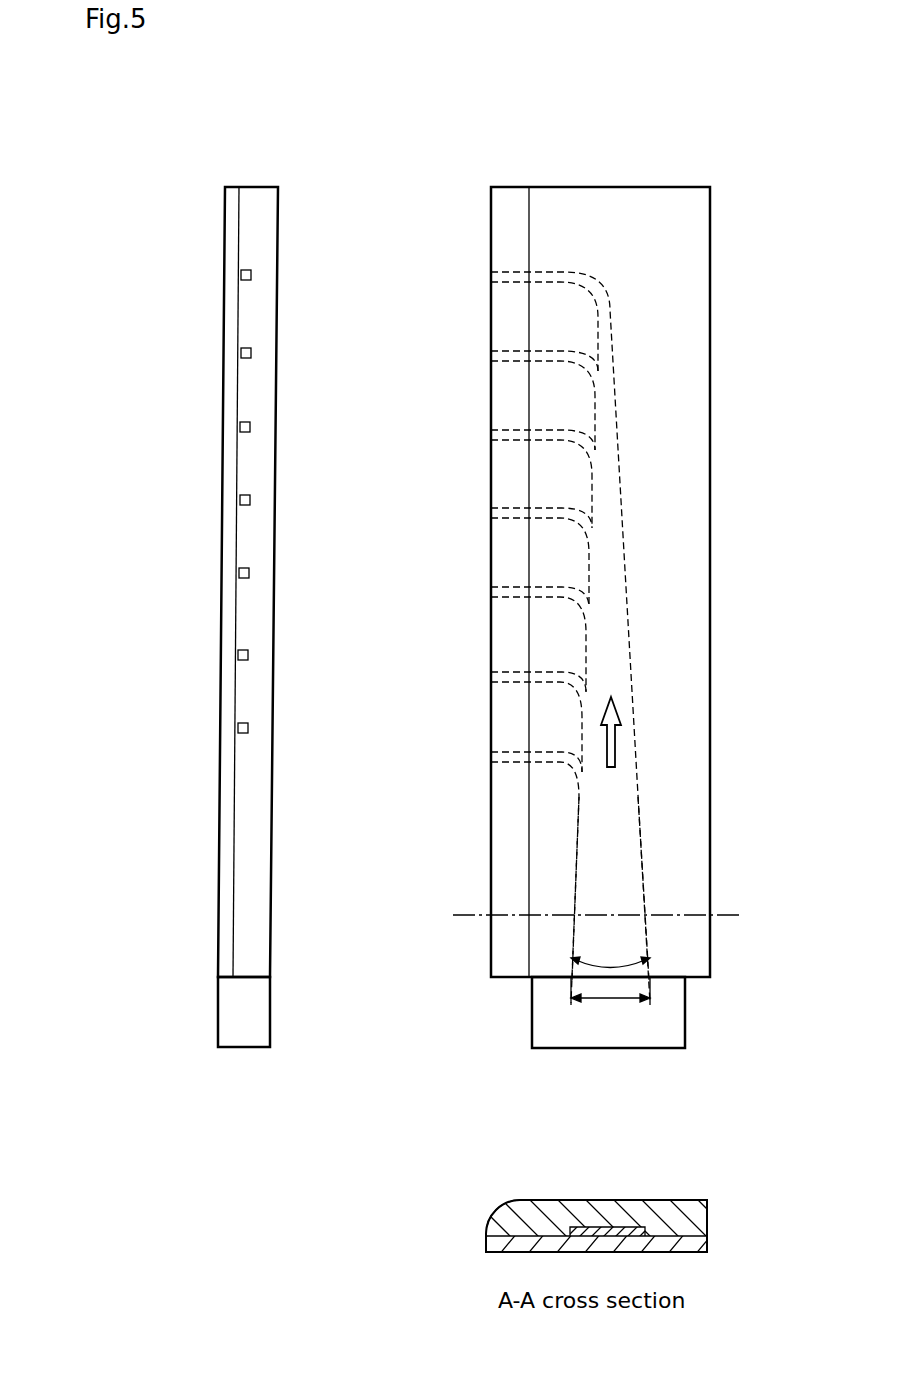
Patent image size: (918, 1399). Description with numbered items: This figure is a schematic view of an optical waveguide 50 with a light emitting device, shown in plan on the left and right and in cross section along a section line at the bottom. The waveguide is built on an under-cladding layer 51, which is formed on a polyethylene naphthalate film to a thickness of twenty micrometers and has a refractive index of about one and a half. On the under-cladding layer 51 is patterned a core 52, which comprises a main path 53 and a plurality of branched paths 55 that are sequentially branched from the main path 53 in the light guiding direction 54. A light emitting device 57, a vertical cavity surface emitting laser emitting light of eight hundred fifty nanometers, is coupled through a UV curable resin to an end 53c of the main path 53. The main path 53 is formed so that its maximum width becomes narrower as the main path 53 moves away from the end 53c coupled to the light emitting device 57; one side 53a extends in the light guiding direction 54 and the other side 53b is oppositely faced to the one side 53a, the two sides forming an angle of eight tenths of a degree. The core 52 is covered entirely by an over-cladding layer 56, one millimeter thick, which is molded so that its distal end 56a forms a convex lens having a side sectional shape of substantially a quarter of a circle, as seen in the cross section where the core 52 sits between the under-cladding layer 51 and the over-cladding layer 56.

The optical waveguide with a light emitting device 50 is at (372, 142).
The under-cladding layer 51 is at (225, 187).
The core 52 is at (606, 562).
The main path 53 is at (612, 885).
The one side 53a is at (575, 838).
The other side 53b is at (643, 838).
The end 53c is at (605, 985).
The light guiding direction 54 is at (615, 743).
The branched path 55 is at (252, 270).
The over-cladding layer 56 is at (280, 187).
The distal end 56a is at (497, 1210).
The light emitting device 57 is at (218, 1047).